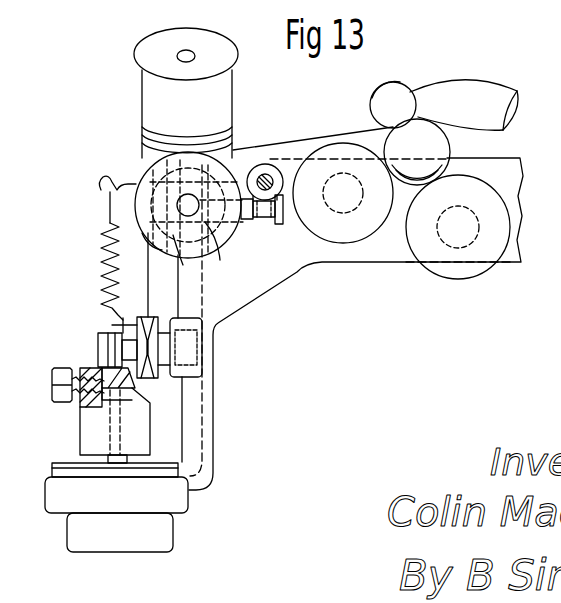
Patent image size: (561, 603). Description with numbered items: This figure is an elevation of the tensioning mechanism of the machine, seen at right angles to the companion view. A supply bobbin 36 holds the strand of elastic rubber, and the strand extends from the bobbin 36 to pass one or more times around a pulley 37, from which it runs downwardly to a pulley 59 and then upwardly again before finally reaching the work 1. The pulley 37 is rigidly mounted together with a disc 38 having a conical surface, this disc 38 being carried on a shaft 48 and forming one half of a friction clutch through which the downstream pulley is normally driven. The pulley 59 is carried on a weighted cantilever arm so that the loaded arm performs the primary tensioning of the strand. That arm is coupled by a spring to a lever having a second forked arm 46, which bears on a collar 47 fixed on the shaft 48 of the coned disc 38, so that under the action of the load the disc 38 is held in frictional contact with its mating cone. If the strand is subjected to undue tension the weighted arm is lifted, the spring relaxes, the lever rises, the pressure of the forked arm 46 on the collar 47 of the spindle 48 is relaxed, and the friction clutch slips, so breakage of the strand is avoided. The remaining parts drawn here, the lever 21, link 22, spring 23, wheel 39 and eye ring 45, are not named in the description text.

The work 1 is at (446, 155).
The lever arm 21 is at (233, 238).
The link 22 is at (220, 262).
The spring 23 is at (100, 260).
The supply bobbin 36 is at (142, 93).
The pulley 37 is at (144, 238).
The disc 38 is at (170, 262).
The wheel 39 is at (223, 194).
The eye ring 45 is at (272, 174).
The forked arm 46 is at (268, 222).
The collar 47 is at (281, 219).
The shaft 48 is at (244, 219).
The pulley 59 is at (150, 386).